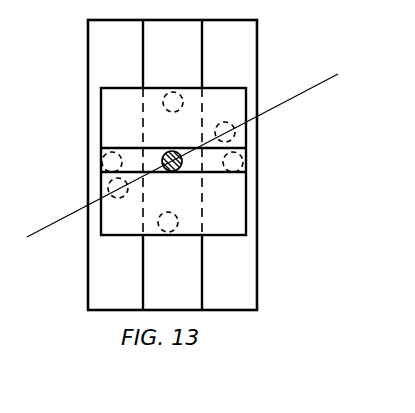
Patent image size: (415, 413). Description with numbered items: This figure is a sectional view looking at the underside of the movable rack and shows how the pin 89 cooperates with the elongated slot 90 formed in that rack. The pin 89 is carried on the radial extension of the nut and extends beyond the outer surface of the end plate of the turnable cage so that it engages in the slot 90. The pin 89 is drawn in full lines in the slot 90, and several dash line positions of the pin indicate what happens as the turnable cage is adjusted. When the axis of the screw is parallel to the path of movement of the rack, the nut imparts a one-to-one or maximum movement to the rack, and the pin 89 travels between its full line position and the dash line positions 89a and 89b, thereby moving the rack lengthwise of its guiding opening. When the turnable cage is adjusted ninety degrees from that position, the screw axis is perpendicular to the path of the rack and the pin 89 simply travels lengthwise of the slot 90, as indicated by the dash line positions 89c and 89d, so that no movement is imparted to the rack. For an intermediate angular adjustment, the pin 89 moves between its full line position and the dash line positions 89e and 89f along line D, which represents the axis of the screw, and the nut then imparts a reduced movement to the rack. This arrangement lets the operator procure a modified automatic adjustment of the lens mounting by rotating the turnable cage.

The pin 89 is at (172, 151).
The dash line position of pin 89a is at (170, 233).
The dash line position of pin 89b is at (180, 82).
The dash line position of pin 89c is at (104, 162).
The dash line position of pin 89d is at (243, 163).
The dash line position of pin 89e is at (110, 190).
The dash line position of pin 89f is at (256, 131).
The elongated slot 90 is at (178, 171).
The line representing axis of screw D is at (308, 91).